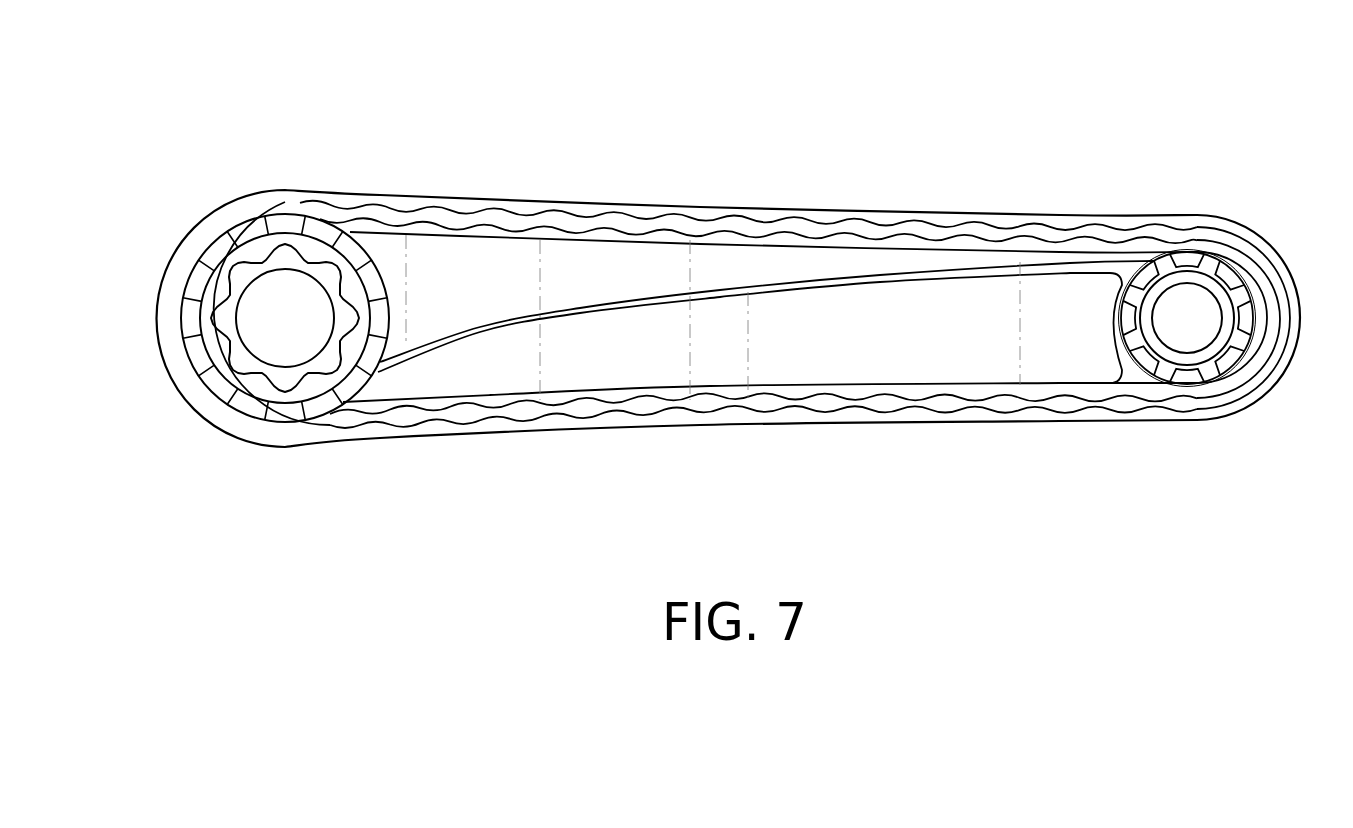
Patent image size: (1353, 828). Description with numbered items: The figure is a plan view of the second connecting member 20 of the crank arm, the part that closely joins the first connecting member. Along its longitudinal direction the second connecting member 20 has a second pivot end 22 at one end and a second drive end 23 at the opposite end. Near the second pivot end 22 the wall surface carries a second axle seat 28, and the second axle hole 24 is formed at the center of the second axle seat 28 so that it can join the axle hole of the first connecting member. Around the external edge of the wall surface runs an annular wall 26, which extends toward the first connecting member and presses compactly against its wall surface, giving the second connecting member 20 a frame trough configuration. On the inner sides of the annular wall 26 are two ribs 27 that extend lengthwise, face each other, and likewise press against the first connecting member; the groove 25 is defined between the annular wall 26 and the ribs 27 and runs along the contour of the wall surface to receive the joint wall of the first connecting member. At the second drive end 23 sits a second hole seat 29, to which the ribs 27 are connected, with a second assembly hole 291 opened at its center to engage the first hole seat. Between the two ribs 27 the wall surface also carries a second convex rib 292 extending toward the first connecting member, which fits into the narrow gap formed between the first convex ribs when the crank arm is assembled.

The second connecting member 20 is at (612, 438).
The second pivot end 22 is at (208, 228).
The second drive end 23 is at (1295, 252).
The second axle hole 24 is at (265, 265).
The groove 25 is at (657, 230).
The annular wall 26 is at (552, 207).
The ribs 27 is at (983, 388).
The second axle seat 28 is at (336, 265).
The second hole seat 29 is at (1193, 268).
The second assembly hole 291 is at (1200, 332).
The second convex rib 292 is at (813, 283).